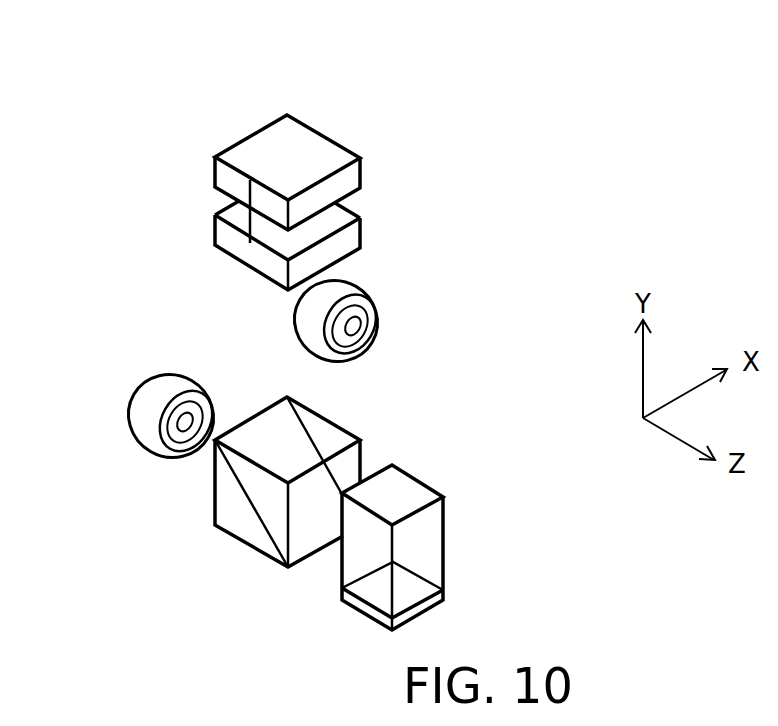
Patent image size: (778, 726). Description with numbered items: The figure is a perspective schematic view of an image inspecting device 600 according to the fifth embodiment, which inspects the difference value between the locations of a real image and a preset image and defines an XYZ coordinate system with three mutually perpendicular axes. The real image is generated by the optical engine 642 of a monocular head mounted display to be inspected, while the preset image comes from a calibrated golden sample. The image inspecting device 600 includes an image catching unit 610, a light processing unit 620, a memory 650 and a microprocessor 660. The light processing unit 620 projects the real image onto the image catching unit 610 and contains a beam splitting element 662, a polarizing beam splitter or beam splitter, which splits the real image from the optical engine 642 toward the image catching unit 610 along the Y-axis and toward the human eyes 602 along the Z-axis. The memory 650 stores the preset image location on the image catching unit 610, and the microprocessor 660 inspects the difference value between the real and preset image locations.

The image inspecting device 600 is at (82, 85).
The human eyes 602 is at (139, 391).
The image catching unit 610 is at (361, 232).
The light processing unit 620 is at (293, 470).
The optical engine 642 is at (445, 548).
The memory 650 is at (361, 172).
The microprocessor 660 is at (214, 182).
The beam splitting element 662 is at (250, 503).